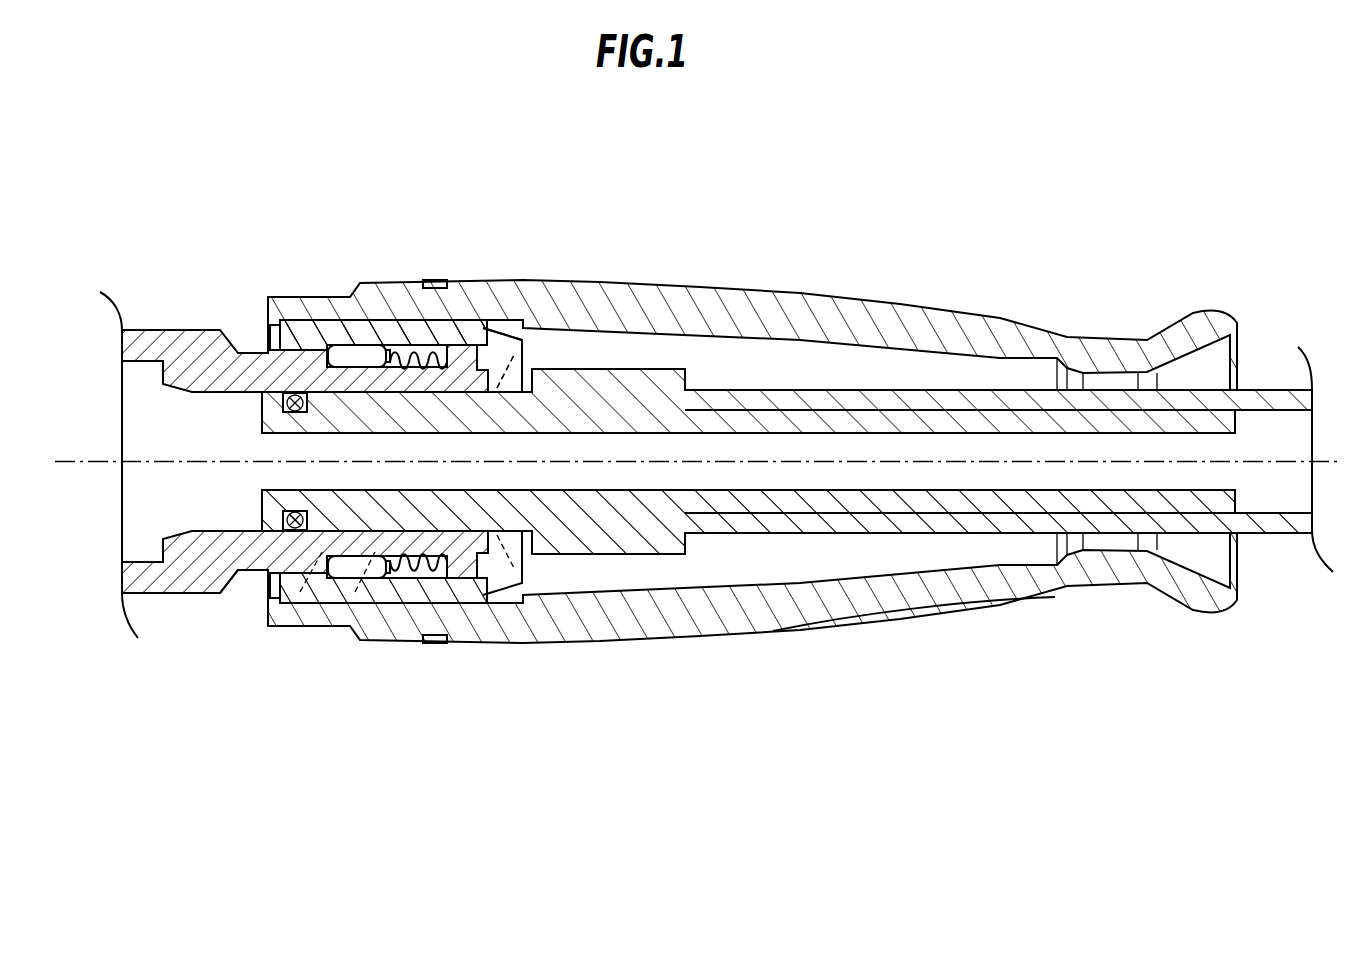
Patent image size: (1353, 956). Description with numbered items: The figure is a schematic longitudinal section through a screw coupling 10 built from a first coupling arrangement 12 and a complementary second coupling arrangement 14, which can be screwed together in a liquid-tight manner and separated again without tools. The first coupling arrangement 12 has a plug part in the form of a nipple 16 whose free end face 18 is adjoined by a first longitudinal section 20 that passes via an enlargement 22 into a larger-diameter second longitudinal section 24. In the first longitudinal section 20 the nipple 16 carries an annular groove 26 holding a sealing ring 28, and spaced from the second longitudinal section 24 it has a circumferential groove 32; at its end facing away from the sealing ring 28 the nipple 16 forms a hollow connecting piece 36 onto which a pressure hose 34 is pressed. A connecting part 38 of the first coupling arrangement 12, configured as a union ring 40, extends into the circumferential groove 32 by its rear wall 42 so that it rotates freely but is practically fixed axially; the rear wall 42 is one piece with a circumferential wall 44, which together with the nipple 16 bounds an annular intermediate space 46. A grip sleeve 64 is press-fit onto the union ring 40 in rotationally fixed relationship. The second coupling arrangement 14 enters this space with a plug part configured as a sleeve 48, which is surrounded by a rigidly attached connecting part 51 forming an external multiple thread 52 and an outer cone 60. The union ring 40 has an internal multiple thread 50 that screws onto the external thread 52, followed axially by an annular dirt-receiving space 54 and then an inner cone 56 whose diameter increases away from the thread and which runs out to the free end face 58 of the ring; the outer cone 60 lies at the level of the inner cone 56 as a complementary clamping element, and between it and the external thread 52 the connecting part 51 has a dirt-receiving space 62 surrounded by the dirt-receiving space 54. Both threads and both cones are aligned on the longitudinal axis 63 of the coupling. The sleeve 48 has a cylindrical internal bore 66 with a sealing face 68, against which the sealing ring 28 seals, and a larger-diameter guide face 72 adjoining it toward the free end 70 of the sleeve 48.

The screw coupling 10 is at (561, 244).
The first coupling arrangement 12 is at (632, 358).
The second coupling arrangement 14 is at (216, 323).
The nipple 16 is at (434, 518).
The free end face 18 is at (262, 420).
The first longitudinal section 20 is at (322, 552).
The enlargement 22 is at (378, 590).
The second longitudinal section 24 is at (428, 580).
The annular groove 26 is at (212, 560).
The sealing ring 28 is at (283, 514).
The circumferential groove 32 is at (520, 592).
The pressure hose 34 is at (830, 400).
The hollow connecting piece 36 is at (905, 428).
The connecting part 38 is at (367, 308).
The union ring 40 is at (396, 348).
The rear wall 42 is at (517, 360).
The circumferential wall 44 is at (430, 280).
The annular intermediate space 46 is at (512, 336).
The sleeve 48 is at (298, 362).
The internal multiple thread 50 is at (455, 342).
The connecting part 51 is at (311, 343).
The external multiple thread 52 is at (450, 585).
The dirt-receiving space 54 is at (350, 296).
The inner cone 56 is at (283, 563).
The free end face 58 is at (265, 335).
The outer cone 60 is at (292, 580).
The dirt-receiving space 62 is at (330, 345).
The longitudinal axis 63 is at (82, 460).
The grip sleeve 64 is at (780, 316).
The cylindrical internal bore 66 is at (195, 502).
The sealing face 68 is at (283, 400).
The free end 70 is at (405, 378).
The guide face 72 is at (377, 393).